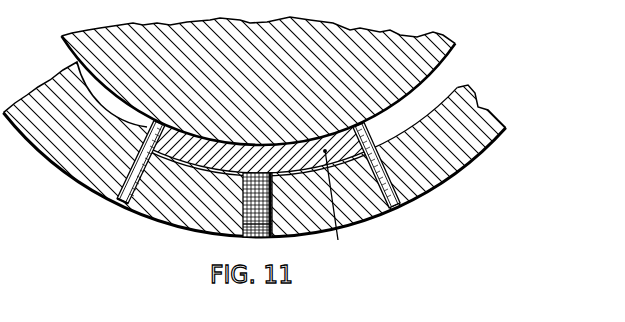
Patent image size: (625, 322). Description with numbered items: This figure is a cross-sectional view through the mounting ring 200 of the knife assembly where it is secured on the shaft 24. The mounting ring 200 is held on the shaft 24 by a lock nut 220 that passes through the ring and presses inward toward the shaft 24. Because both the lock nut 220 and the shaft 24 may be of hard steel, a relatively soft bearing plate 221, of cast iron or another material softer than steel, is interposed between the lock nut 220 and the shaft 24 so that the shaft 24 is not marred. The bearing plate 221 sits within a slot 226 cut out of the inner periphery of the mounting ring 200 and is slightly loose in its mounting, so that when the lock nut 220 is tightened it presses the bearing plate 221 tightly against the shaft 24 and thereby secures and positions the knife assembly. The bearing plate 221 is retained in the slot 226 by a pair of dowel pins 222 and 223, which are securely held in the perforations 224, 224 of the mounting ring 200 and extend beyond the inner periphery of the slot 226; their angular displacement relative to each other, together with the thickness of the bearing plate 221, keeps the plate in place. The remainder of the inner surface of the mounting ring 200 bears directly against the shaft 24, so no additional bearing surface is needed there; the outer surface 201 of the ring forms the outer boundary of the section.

The shaft 24 is at (451, 42).
The mounting ring 200 is at (478, 107).
The outer surface of ring segment 201 is at (459, 172).
The lock nut 220 is at (243, 213).
The bearing plate 221 is at (346, 202).
The dowel pin 222 is at (124, 201).
The dowel pin 223 is at (409, 197).
The perforations 224 is at (119, 184).
The slot 226 is at (437, 83).